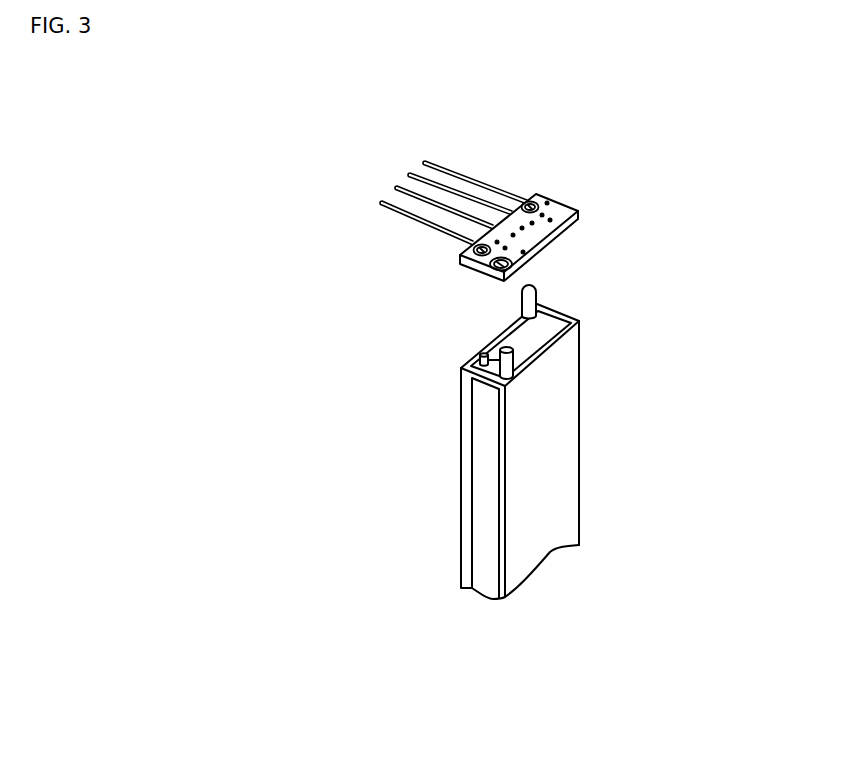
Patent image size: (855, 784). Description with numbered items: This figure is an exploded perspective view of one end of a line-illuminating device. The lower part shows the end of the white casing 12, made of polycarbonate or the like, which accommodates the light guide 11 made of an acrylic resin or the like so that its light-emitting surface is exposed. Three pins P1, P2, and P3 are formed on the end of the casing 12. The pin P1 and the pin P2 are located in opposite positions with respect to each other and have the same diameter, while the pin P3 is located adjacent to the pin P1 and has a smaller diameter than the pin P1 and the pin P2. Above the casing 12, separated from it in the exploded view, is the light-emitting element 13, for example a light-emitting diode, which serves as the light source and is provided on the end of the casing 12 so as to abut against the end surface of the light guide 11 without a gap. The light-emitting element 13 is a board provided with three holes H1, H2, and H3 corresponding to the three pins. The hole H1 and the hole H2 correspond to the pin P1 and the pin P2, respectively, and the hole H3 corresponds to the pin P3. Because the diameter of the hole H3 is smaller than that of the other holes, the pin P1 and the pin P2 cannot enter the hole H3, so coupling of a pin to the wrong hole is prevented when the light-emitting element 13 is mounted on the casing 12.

The light guide 11 is at (478, 552).
The casing 12 is at (570, 471).
The light-emitting element 13 is at (568, 208).
The hole H1 is at (527, 202).
The hole H2 is at (483, 264).
The hole H3 is at (473, 247).
The pin P1 is at (537, 298).
The pin P2 is at (513, 358).
The pin P3 is at (480, 358).